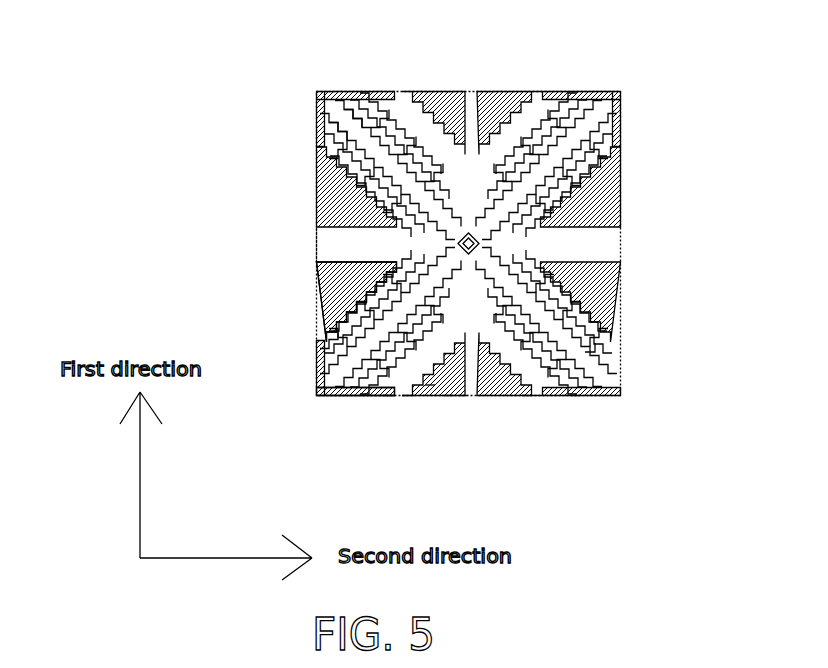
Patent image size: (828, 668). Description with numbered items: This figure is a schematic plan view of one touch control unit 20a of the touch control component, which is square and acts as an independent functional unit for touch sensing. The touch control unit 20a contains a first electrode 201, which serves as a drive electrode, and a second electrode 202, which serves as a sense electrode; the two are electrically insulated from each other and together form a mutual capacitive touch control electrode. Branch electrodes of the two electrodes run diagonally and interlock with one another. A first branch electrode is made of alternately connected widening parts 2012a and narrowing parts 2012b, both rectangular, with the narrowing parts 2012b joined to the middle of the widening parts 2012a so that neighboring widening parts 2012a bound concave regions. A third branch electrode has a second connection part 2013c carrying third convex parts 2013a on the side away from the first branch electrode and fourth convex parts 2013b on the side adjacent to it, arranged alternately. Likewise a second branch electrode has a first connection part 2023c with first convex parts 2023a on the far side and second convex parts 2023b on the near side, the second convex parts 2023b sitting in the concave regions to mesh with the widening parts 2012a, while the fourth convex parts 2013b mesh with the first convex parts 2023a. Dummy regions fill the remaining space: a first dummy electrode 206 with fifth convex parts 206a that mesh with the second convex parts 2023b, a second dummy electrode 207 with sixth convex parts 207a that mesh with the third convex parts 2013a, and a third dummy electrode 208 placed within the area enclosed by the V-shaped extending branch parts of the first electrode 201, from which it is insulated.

The touch control unit 20a is at (473, 59).
The sixth convex parts 207a is at (318, 106).
The widening parts 2012a is at (360, 118).
The narrowing parts 2012b is at (340, 175).
The second electrode 202 is at (317, 243).
The first dummy electrode 206 is at (318, 305).
The fifth convex parts 206a is at (320, 322).
The third dummy electrode 208 is at (319, 400).
The third convex parts 2013a is at (410, 398).
The fourth convex parts 2013b is at (395, 393).
The second connection part 2013c is at (449, 397).
The second dummy electrode 207 is at (432, 397).
The first electrode 201 is at (461, 397).
The first convex parts 2023a is at (527, 398).
The second convex parts 2023b is at (574, 398).
The first connection part 2023c is at (585, 352).